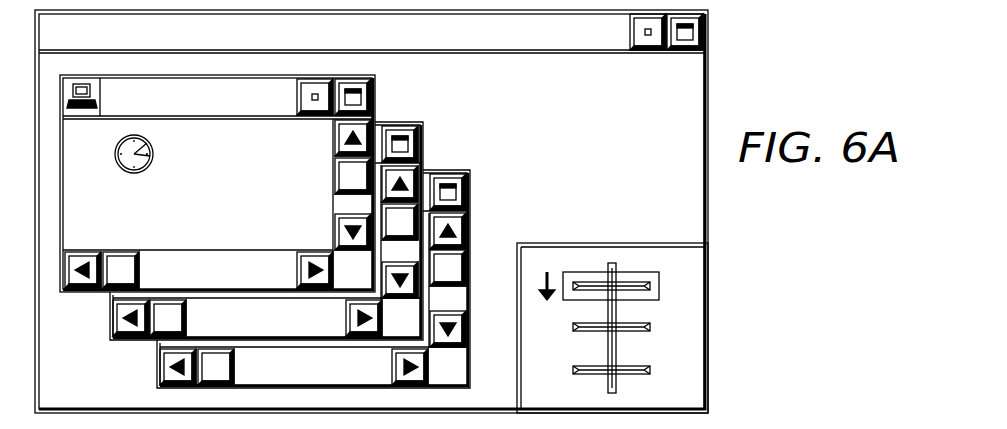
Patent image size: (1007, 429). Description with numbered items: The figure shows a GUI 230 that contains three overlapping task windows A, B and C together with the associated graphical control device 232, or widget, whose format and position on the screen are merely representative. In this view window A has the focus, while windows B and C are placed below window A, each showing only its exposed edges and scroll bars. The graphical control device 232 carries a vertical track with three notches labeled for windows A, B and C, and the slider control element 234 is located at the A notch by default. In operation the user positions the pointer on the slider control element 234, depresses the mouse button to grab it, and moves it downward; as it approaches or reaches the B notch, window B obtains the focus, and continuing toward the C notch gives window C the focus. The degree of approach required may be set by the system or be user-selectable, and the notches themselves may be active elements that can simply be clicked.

The GUI 230 is at (624, 137).
The graphical control device 232 is at (640, 243).
The slider control element 234 is at (590, 272).
The task window A is at (377, 97).
The task window B is at (425, 145).
The task window C is at (472, 192).